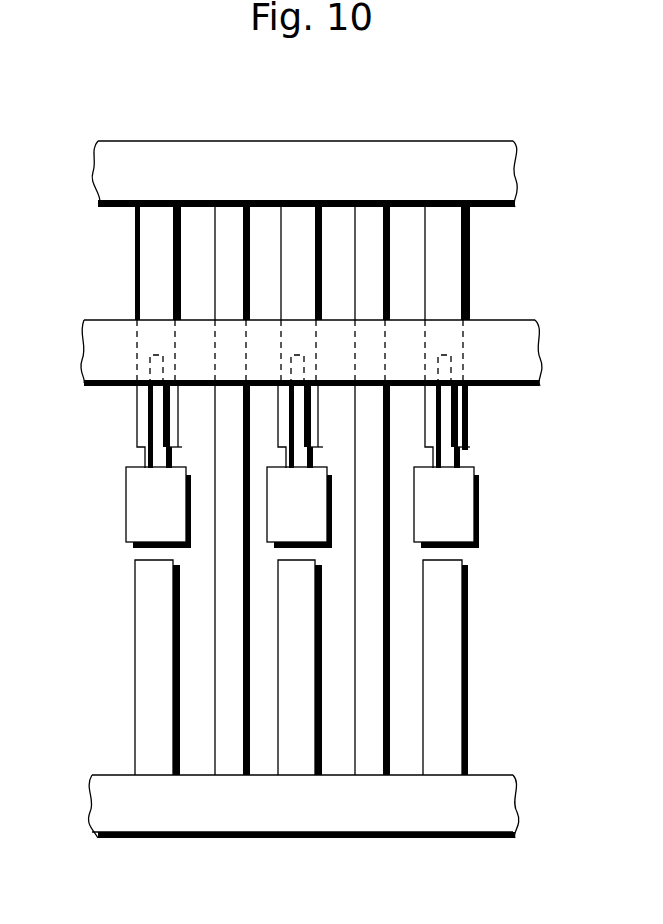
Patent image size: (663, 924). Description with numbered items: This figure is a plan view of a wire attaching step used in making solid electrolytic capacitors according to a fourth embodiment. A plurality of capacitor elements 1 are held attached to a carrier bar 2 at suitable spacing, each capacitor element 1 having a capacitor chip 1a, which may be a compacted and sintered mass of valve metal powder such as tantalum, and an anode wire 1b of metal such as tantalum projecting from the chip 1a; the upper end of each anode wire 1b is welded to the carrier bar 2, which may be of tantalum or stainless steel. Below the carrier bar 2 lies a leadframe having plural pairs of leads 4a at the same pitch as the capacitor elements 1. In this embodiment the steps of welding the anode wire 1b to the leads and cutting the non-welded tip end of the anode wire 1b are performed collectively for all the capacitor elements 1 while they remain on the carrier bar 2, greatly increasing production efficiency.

The lead 4a is at (160, 245).
The carrier bar 2 is at (483, 342).
The capacitor element 1 is at (297, 467).
The capacitor chip 1a is at (147, 505).
The anode wire 1b is at (150, 462).